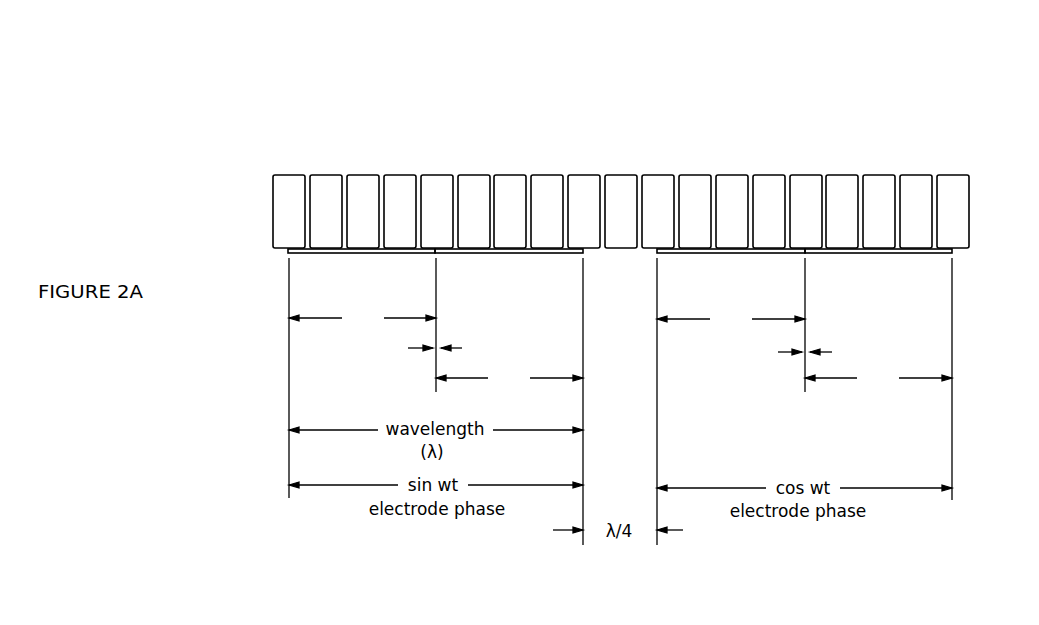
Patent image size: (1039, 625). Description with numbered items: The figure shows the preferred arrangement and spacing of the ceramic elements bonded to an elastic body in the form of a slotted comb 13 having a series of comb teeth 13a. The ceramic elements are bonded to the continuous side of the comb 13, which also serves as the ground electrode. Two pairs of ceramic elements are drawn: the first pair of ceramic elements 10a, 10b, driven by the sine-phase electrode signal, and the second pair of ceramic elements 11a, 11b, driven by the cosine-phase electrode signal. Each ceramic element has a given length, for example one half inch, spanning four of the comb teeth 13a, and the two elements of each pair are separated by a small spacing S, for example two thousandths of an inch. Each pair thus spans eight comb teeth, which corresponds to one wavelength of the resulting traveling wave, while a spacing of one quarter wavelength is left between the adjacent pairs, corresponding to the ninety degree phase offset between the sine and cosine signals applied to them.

The slotted comb 13 is at (621, 158).
The comb teeth 13a is at (855, 158).
The ceramic element 10a is at (362, 318).
The ceramic element 10b is at (509, 378).
The ceramic element 11a is at (731, 319).
The ceramic element 11b is at (878, 378).
The spacing S is at (612, 350).